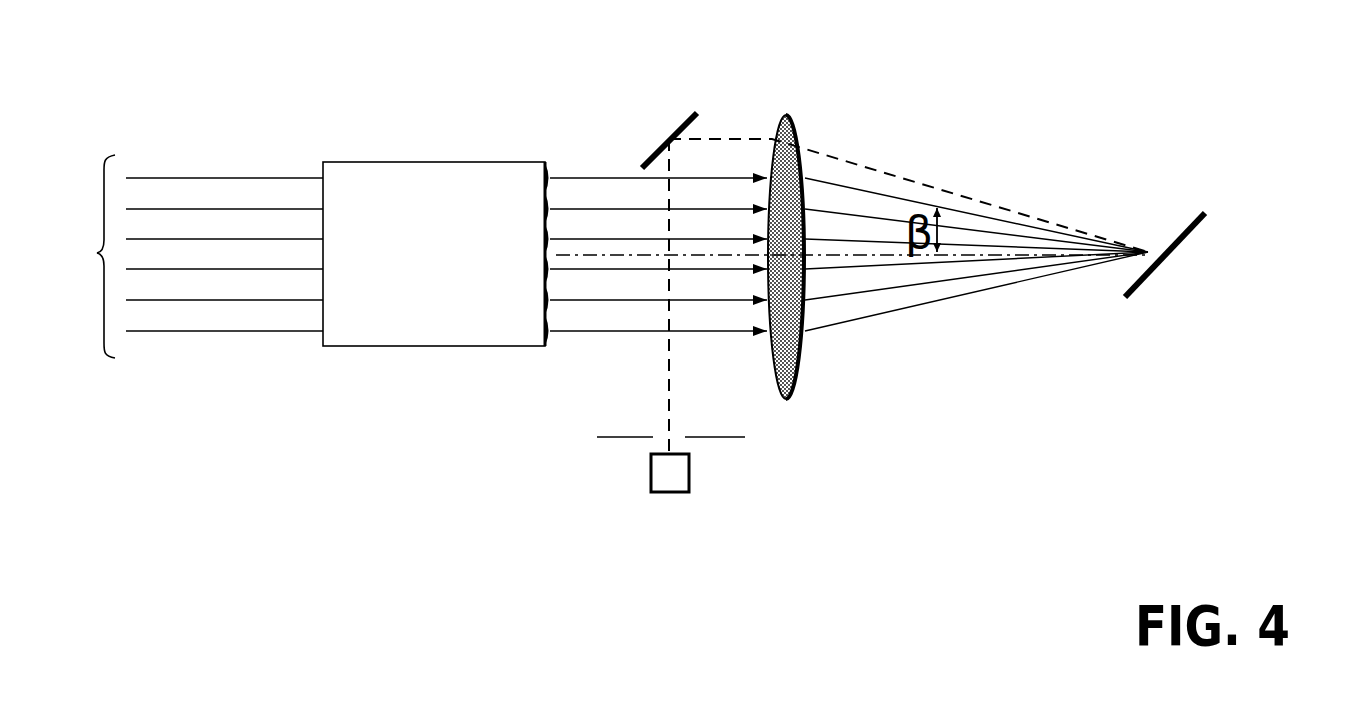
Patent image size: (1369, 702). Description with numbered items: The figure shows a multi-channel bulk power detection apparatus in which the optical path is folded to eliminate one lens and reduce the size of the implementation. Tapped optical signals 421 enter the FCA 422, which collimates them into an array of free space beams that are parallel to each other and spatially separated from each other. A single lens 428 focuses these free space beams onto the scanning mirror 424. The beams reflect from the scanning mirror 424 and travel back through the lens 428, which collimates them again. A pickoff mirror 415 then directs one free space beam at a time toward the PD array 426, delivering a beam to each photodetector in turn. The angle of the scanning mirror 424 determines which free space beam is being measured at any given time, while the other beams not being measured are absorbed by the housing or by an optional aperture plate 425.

The input light beams 421 is at (179, 256).
The FCA 422 is at (437, 346).
The pickoff mirror 415 is at (795, 271).
The lens 428 is at (788, 113).
The scanning mirror 424 is at (1212, 223).
The aperture plate 425 is at (624, 436).
The PD array 426 is at (694, 477).